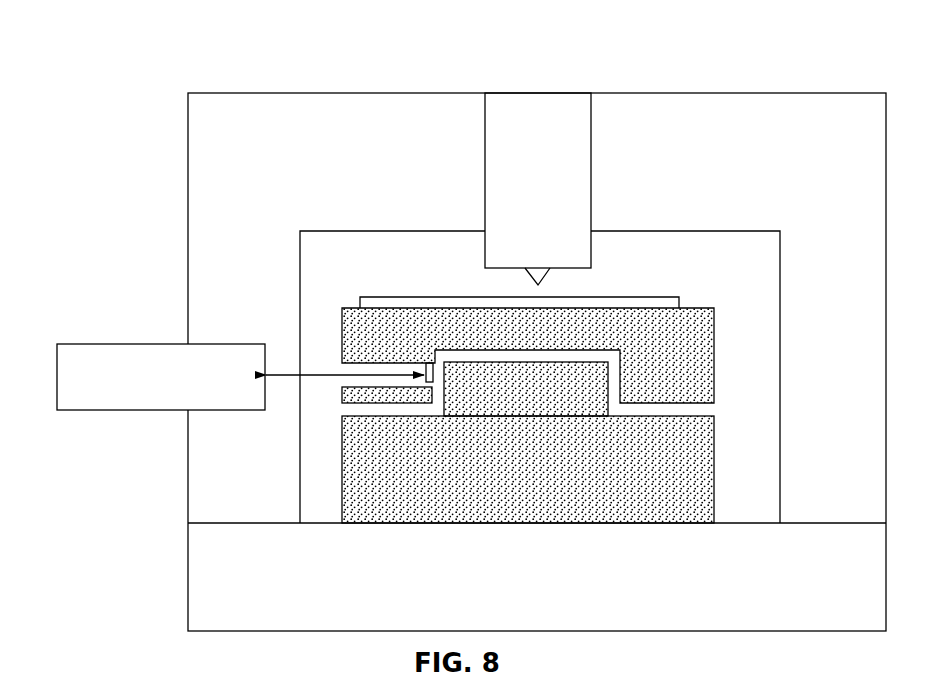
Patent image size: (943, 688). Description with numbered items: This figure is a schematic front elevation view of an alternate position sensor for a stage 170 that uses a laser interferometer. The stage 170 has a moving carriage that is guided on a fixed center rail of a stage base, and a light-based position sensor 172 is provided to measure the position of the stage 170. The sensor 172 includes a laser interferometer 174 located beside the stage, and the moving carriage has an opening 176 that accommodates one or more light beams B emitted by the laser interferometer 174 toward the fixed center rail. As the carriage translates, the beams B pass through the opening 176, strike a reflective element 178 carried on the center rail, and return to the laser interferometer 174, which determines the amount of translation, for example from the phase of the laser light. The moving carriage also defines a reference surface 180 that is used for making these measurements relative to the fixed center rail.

The stage 170 is at (178, 48).
The light-based position sensor 172 is at (173, 292).
The laser interferometer 174 is at (128, 344).
The opening 176 is at (334, 367).
The reflective element 178 is at (440, 362).
The reference surface 180 is at (341, 399).
The light beams B is at (291, 379).